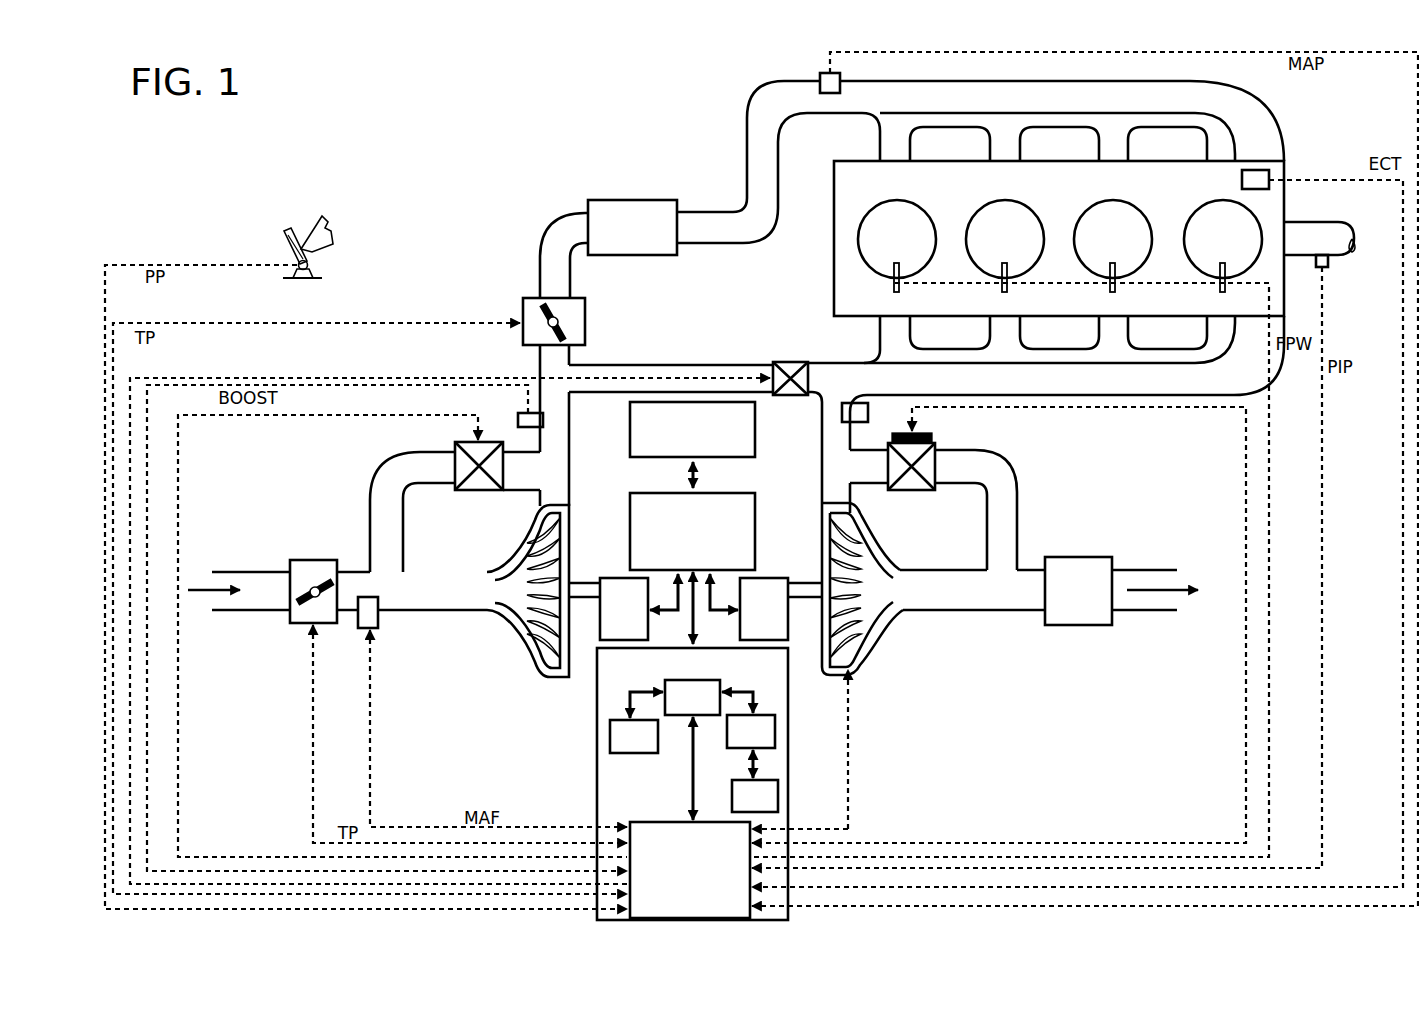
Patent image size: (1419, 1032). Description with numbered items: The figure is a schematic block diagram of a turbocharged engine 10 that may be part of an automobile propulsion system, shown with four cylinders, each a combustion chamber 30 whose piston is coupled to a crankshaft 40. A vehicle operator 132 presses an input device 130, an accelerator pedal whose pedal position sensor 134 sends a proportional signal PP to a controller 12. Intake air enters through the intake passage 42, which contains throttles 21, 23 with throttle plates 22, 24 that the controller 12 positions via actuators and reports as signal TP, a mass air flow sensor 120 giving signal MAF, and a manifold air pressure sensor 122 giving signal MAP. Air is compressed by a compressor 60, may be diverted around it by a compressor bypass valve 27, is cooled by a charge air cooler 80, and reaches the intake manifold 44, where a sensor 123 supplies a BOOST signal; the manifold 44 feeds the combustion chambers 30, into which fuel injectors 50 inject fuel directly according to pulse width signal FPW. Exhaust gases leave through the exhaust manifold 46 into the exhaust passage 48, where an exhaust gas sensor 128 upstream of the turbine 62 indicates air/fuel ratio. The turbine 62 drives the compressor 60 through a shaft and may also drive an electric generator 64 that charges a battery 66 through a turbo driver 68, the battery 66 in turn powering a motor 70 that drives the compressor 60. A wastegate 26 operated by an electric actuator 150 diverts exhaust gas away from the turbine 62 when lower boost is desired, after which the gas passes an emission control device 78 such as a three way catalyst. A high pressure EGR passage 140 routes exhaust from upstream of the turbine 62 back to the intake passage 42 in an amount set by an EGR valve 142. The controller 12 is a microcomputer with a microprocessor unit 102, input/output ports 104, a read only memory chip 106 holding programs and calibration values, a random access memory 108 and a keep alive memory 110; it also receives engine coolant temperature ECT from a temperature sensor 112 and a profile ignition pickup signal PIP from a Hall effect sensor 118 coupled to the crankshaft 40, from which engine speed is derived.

The engine 10 is at (1146, 191).
The controller 12 is at (625, 796).
The throttle 21 is at (307, 560).
The throttle plate 22 is at (322, 573).
The throttle 23 is at (533, 298).
The throttle plate 24 is at (565, 336).
The wastegate 26 is at (923, 490).
The compressor bypass valve 27 is at (455, 455).
The combustion chamber 30 is at (885, 248).
The crankshaft 40 is at (1330, 222).
The intake passage 42 is at (256, 600).
The intake manifold 44 is at (910, 113).
The exhaust manifold 46 is at (882, 383).
The exhaust passage 48 is at (960, 601).
The fuel injector 50 is at (894, 290).
The compressor 60 is at (523, 633).
The turbine 62 is at (857, 540).
The electric generator 64 is at (752, 617).
The battery 66 is at (755, 437).
The turbo driver 68 is at (723, 493).
The motor 70 is at (612, 617).
The emission control device 78 is at (1066, 601).
The charge air cooler 80 is at (597, 200).
The microprocessor unit 102 is at (640, 690).
The input/output ports 104 is at (705, 904).
The read only memory chip 106 is at (610, 747).
The random access memory 108 is at (775, 718).
The keep alive memory 110 is at (778, 781).
The temperature sensor 112 is at (1259, 170).
The Hall effect sensor 118 is at (1328, 267).
The mass air flow sensor 120 is at (378, 617).
The manifold air pressure sensor 122 is at (820, 75).
The sensor 123 is at (518, 413).
The exhaust gas sensor 128 is at (868, 422).
The input device 130 is at (283, 243).
The vehicle operator 132 is at (332, 232).
The pedal position sensor 134 is at (310, 265).
The EGR passage 140 is at (613, 330).
The EGR valve 142 is at (792, 362).
The actuator 150 is at (925, 437).